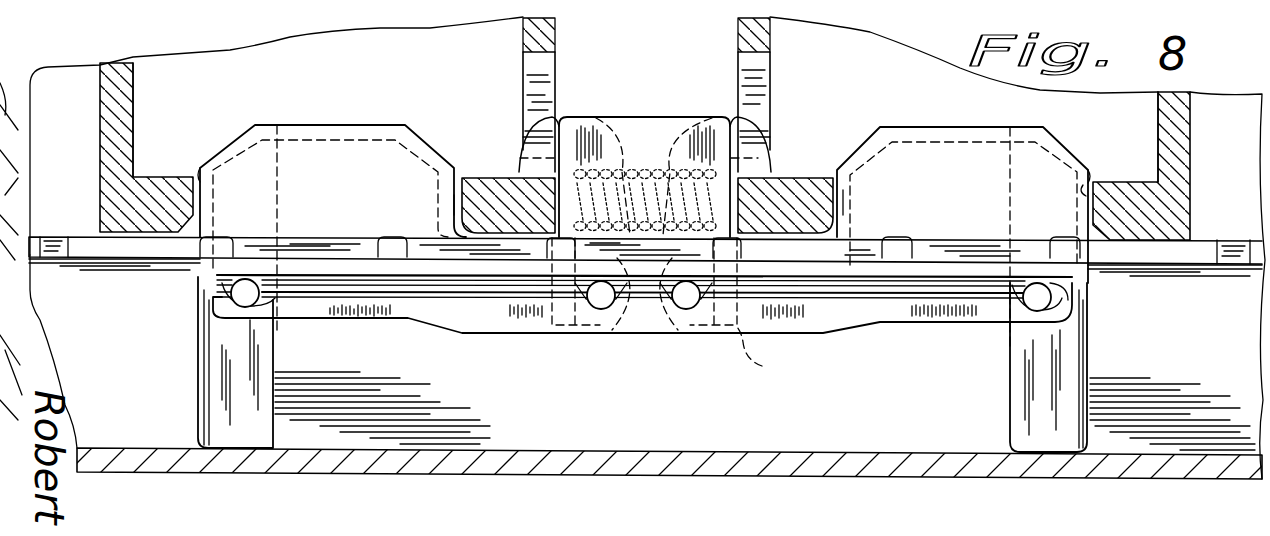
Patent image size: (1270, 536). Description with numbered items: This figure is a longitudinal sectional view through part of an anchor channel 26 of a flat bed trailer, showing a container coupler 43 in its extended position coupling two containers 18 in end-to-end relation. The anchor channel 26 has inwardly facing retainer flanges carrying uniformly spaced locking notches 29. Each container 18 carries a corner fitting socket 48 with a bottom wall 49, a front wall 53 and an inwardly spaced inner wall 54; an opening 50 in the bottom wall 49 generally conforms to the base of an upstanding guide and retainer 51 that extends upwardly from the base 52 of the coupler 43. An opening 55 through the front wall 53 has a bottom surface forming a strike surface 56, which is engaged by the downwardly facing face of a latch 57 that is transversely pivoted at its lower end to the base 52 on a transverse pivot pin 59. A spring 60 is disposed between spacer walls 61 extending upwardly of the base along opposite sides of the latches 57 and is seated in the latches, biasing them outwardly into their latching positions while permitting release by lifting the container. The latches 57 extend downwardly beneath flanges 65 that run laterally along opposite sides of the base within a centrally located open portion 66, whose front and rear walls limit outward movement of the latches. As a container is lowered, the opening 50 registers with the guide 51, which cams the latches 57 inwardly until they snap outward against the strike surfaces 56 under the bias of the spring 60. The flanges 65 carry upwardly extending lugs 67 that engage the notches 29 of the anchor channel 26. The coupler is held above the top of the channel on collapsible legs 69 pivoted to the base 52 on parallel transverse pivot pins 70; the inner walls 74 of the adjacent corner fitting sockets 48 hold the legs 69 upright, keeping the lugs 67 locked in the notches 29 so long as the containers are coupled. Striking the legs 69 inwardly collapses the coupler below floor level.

The container 18 is at (40, 207).
The anchor channel 26 is at (687, 477).
The locking notch 29 is at (1232, 253).
The container coupler 43 is at (678, 95).
The corner fitting socket 48 is at (98, 122).
The bottom wall 49 is at (520, 237).
The opening 50 is at (460, 198).
The guide and retainer 51 is at (353, 125).
The base 52 is at (1020, 237).
The front wall 53 is at (545, 33).
The inner wall 54 is at (134, 108).
The opening 55 is at (535, 70).
The strike surface 56 is at (533, 153).
The latch 57 is at (540, 145).
The transverse pivot pin 59 is at (602, 298).
The spring 60 is at (635, 300).
The spacer wall 61 is at (590, 127).
The flange 65 is at (862, 240).
The open portion 66 is at (762, 350).
The lug 67 is at (223, 242).
The collapsible leg 69 is at (197, 367).
The transverse pivot pin 70 is at (242, 297).
The inner wall 74 is at (202, 178).